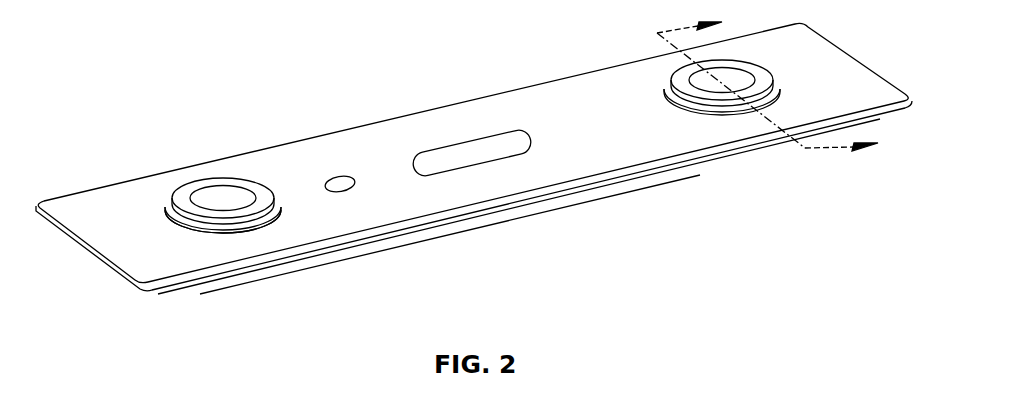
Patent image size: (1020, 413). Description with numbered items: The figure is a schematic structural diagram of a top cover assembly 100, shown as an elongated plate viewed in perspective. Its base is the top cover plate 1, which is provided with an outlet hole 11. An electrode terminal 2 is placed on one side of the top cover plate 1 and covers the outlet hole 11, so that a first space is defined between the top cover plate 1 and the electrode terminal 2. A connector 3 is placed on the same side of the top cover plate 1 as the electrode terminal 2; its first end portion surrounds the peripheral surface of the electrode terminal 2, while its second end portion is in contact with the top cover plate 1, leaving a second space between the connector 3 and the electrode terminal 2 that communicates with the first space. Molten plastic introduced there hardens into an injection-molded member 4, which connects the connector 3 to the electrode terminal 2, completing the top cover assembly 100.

The top cover assembly 100 is at (76, 90).
The top cover plate 1 is at (284, 153).
The electrode terminal 2 is at (213, 196).
The connector 3 is at (170, 214).
The injection-molded member 4 is at (183, 193).
The outlet hole 11 is at (293, 221).